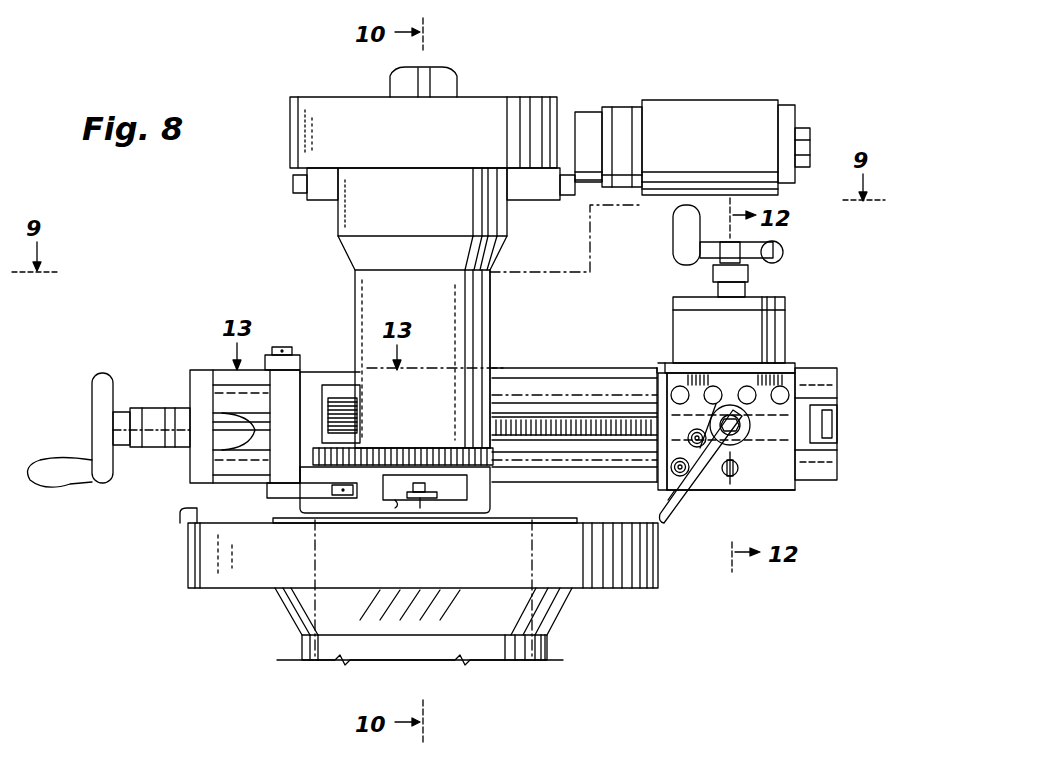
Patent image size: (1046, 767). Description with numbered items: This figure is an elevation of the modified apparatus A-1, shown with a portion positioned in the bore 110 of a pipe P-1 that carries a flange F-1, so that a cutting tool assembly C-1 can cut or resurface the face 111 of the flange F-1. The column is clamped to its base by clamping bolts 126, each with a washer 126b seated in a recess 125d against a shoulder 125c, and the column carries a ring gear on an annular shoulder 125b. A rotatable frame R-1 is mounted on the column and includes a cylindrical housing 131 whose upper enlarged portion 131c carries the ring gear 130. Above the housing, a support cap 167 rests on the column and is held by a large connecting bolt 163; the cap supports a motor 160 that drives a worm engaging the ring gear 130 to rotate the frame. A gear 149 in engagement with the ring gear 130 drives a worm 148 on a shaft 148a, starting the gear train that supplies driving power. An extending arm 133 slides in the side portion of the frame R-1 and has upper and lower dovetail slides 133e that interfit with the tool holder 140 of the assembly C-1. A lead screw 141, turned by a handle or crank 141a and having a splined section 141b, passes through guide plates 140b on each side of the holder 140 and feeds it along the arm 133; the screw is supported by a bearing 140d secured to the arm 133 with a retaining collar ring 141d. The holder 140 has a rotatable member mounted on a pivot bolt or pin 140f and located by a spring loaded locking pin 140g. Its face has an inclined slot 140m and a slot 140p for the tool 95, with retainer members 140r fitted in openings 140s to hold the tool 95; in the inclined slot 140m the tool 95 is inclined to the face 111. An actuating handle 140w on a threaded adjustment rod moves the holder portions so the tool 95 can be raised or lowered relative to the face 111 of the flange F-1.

The connecting bolt 163 is at (465, 86).
The support cap 167 is at (290, 145).
The motor 160 is at (712, 110).
The upper enlarged portion of the housing 131c is at (338, 215).
The apparatus A-1 is at (254, 196).
The cylindrical frame member or housing 131 is at (470, 315).
The rotatable frame R-1 is at (476, 287).
The actuating handle 140w is at (783, 250).
The openings 140s is at (680, 396).
The tool holder 140 is at (790, 470).
The slot 140p is at (716, 394).
The pivot bolt or pin 140f is at (743, 425).
The retainer members 140r is at (702, 448).
The inclined slot 140m is at (682, 505).
The spring loaded locking pin 140g is at (736, 476).
The cutting tool assembly C-1 is at (780, 488).
The tool 95 is at (678, 492).
The retaining collar ring 141d is at (830, 410).
The bearing 140d is at (838, 426).
The guide plates 140b is at (657, 376).
The extending arm 133 is at (545, 368).
The dovetail slides 133e is at (585, 393).
The lead screw 141 is at (560, 432).
The splined section 141b is at (213, 430).
The handle or crank 141a is at (100, 375).
The worm 148 is at (360, 400).
The shaft 148a is at (358, 430).
The gear 149 is at (360, 448).
The ring gear 130 is at (436, 452).
The annular shoulder 125b is at (470, 490).
The washer 126b is at (443, 498).
The clamping bolts 126 is at (430, 500).
The shoulder 125c is at (392, 500).
The recess or slot 125d is at (416, 502).
The flange F-1 is at (188, 548).
The face of the flange 111 is at (190, 515).
The pipe P-1 is at (565, 605).
The bore 110 is at (527, 640).